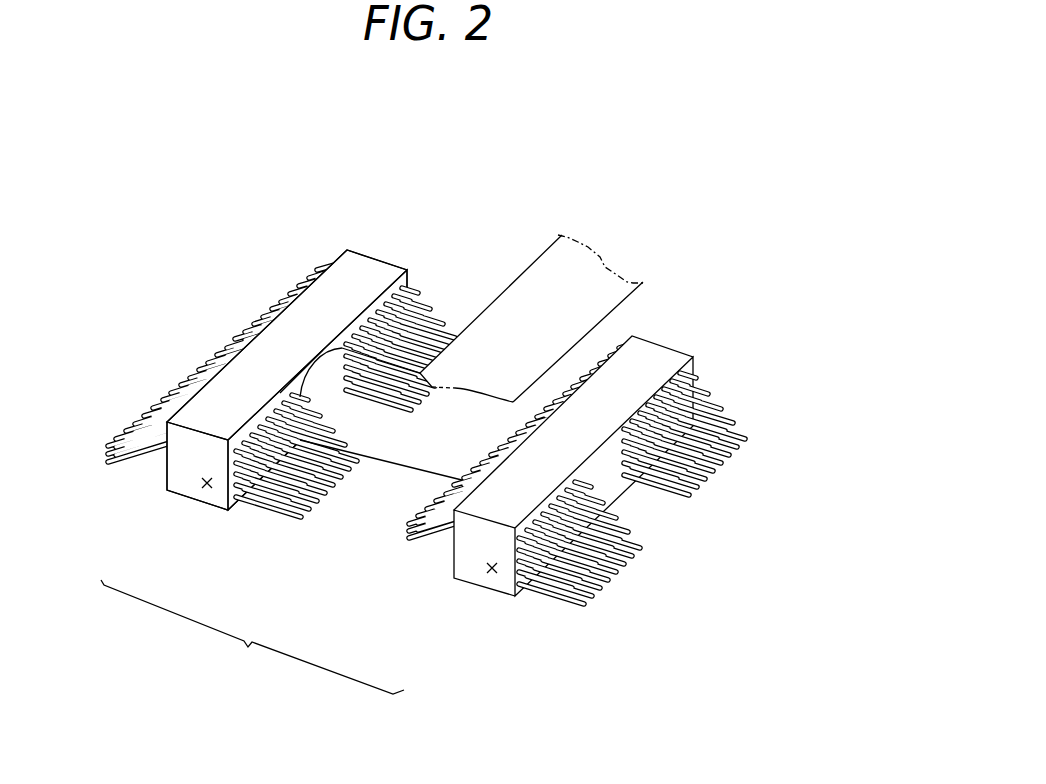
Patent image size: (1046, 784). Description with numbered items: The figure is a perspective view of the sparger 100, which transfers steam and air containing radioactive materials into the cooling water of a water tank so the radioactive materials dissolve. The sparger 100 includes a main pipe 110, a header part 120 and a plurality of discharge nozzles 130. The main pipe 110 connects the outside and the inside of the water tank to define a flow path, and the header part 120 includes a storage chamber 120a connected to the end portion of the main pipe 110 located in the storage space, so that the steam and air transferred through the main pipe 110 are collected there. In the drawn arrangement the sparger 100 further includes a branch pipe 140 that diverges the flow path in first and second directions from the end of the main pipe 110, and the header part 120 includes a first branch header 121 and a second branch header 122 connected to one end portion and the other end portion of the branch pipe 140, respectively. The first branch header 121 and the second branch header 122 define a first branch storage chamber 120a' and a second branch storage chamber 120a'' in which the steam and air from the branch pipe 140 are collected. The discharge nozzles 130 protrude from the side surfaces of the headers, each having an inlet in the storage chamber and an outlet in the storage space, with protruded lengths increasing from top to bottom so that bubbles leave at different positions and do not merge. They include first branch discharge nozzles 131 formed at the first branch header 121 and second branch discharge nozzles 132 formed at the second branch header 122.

The sparger 100 is at (190, 216).
The main pipe 110 is at (590, 270).
The header part 120 is at (557, 103).
The first branch header 121 is at (321, 313).
The second branch header 122 is at (611, 417).
The storage chamber 120a is at (252, 637).
The first branch storage chamber 120a' is at (161, 531).
The second branch storage chamber 120a'' is at (439, 622).
The discharge nozzle 130 is at (735, 385).
The first branch discharge nozzles 131 is at (150, 468).
The second branch discharge nozzles 132 is at (555, 596).
The branch pipe 140 is at (420, 453).